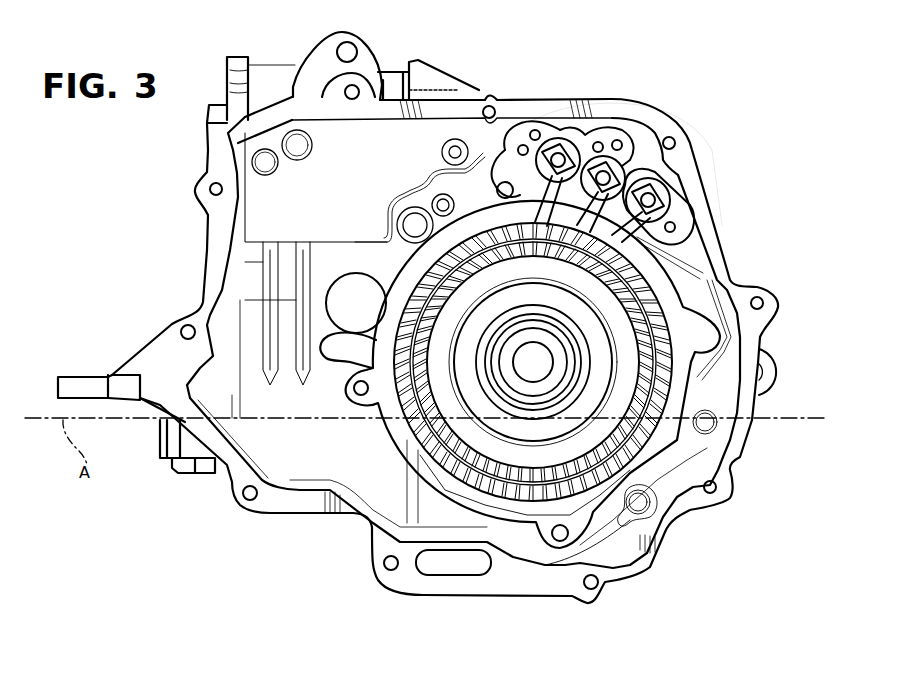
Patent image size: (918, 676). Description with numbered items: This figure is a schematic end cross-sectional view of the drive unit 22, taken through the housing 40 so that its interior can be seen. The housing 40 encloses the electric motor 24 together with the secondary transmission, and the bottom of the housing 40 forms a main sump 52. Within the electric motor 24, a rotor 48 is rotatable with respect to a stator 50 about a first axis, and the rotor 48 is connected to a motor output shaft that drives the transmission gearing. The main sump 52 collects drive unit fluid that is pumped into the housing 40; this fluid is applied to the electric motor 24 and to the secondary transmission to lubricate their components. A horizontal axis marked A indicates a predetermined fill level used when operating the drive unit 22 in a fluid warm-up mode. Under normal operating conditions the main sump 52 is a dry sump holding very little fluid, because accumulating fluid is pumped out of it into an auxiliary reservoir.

The drive unit 22 is at (556, 63).
The electric motor 24 is at (677, 440).
The housing 40 is at (632, 107).
The rotor 48 is at (602, 318).
The stator 50 is at (660, 325).
The main sump 52 is at (628, 524).